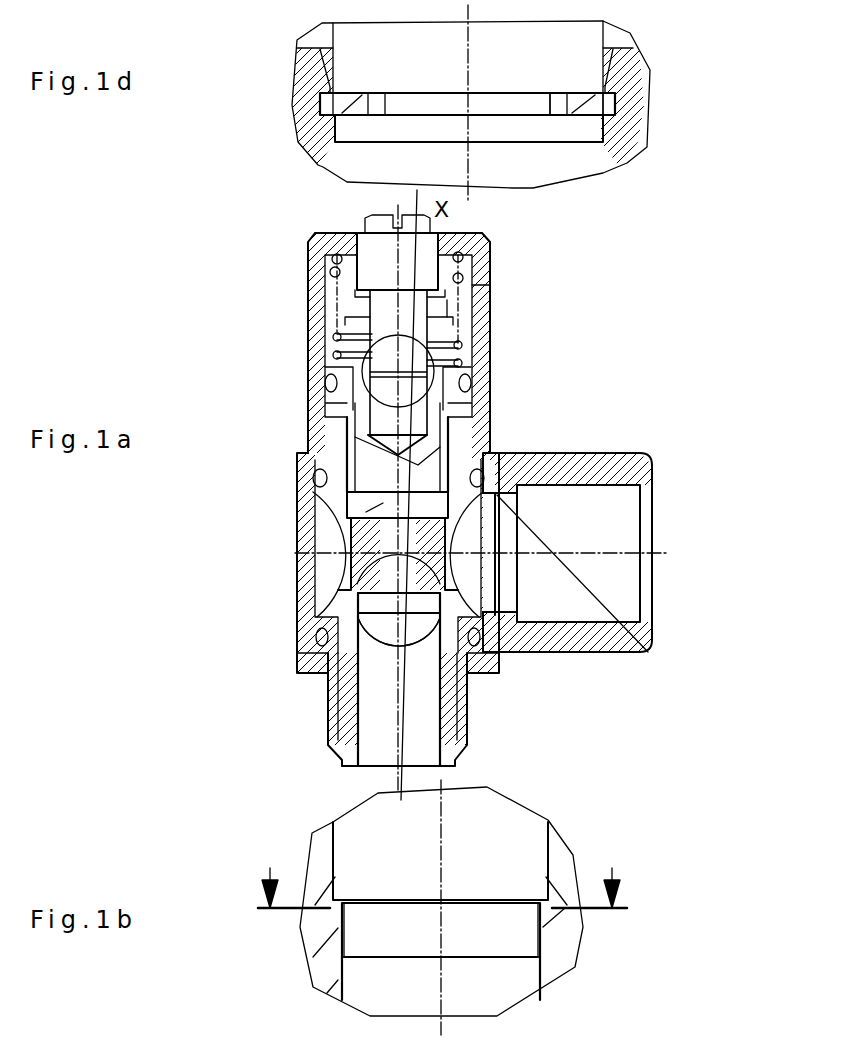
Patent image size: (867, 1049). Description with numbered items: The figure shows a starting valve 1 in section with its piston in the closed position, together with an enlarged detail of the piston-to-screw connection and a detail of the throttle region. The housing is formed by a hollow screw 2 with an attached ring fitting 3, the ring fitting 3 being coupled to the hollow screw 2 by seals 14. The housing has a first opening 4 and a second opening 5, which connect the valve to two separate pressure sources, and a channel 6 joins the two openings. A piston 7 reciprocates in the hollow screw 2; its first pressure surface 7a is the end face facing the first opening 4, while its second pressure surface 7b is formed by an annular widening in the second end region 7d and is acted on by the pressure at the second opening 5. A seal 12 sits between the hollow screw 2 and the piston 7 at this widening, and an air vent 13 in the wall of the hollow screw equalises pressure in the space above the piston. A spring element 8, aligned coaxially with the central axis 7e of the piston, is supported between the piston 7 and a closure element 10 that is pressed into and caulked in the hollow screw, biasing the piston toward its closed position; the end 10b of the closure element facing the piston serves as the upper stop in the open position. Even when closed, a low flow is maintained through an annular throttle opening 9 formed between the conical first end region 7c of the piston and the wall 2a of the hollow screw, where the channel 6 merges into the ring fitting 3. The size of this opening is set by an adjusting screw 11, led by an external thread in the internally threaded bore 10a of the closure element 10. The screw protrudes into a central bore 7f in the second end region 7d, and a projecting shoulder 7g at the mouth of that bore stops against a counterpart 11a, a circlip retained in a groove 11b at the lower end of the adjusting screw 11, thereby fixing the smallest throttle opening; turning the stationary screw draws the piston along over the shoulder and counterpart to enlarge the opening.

In FIG. 1a, the starting valve 1 is at (582, 419).
In FIG. 1a, the hollow screw 2 is at (318, 386).
In FIG. 1a, the wall of the hollow screw 2a is at (340, 653).
In FIG. 1b, the wall of the hollow screw 2a is at (327, 958).
In FIG. 1a, the ring fitting 3 is at (585, 468).
In FIG. 1a, the first opening 4 is at (398, 772).
In FIG. 1a, the second opening 5 is at (648, 553).
In FIG. 1a, the channel 6 is at (427, 673).
In FIG. 1d, the piston 7 is at (307, 107).
In FIG. 1a, the piston 7 is at (380, 510).
In FIG. 1a, the first pressure surface 7a is at (385, 648).
In FIG. 1b, the first pressure surface 7a is at (477, 960).
In FIG. 1a, the second pressure surface 7b is at (345, 425).
In FIG. 1a, the first end region of the piston 7c is at (338, 627).
In FIG. 1b, the first end region of the piston 7c is at (467, 917).
In FIG. 1a, the second end region of the piston 7d is at (332, 405).
In FIG. 1a, the central axis of the piston 7e is at (400, 265).
In FIG. 1d, the central bore 7f is at (300, 143).
In FIG. 1a, the central bore 7f is at (383, 503).
In FIG. 1d, the projecting shoulder 7g is at (330, 80).
In FIG. 1a, the spring element 8 is at (335, 340).
In FIG. 1b, the throttle opening 9 is at (347, 937).
In FIG. 1a, the closure element 10 is at (308, 247).
In FIG. 1a, the bore of the closure element 10a is at (335, 273).
In FIG. 1a, the end of the closure element 10b is at (447, 312).
In FIG. 1d, the adjusting screw 11 is at (545, 58).
In FIG. 1a, the adjusting screw 11 is at (372, 255).
In FIG. 1d, the counterpart 11a is at (602, 102).
In FIG. 1d, the groove 11b is at (557, 107).
In FIG. 1a, the seal 12 is at (470, 376).
In FIG. 1a, the air vent 13 is at (455, 286).
In FIG. 1a, the seals 14 is at (648, 652).